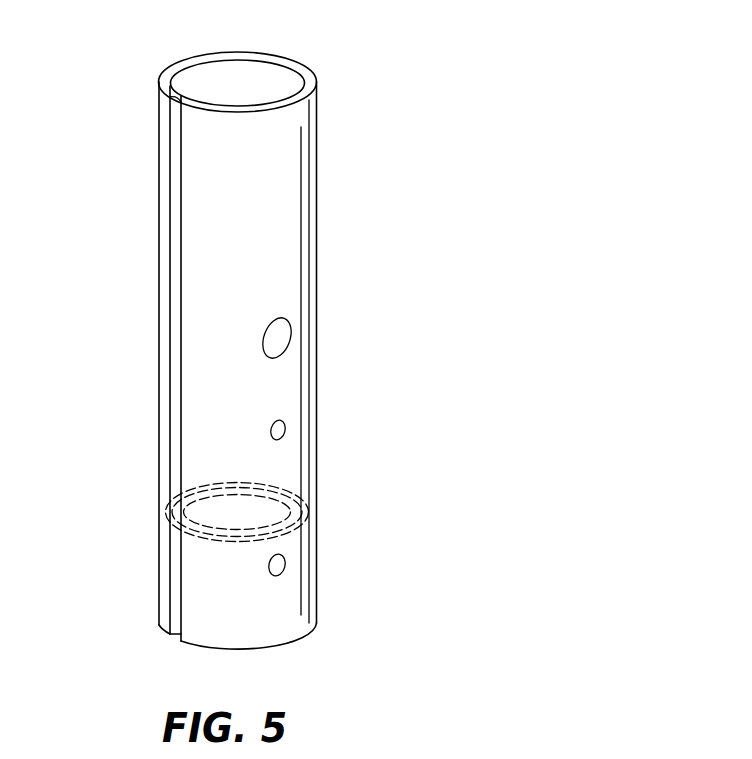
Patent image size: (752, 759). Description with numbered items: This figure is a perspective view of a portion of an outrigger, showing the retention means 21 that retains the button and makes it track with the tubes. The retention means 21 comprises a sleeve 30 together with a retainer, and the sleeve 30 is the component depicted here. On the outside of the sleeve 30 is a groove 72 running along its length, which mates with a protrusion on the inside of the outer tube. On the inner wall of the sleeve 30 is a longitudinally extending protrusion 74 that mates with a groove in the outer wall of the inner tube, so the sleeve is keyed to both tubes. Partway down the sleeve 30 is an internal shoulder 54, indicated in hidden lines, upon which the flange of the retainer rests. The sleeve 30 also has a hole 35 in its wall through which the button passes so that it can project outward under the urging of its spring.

The retention means 21 is at (251, 337).
The sleeve 30 is at (316, 183).
The hole 35 is at (282, 340).
The internal shoulder 54 is at (297, 512).
The groove 72 is at (175, 335).
The protrusion 74 is at (188, 97).